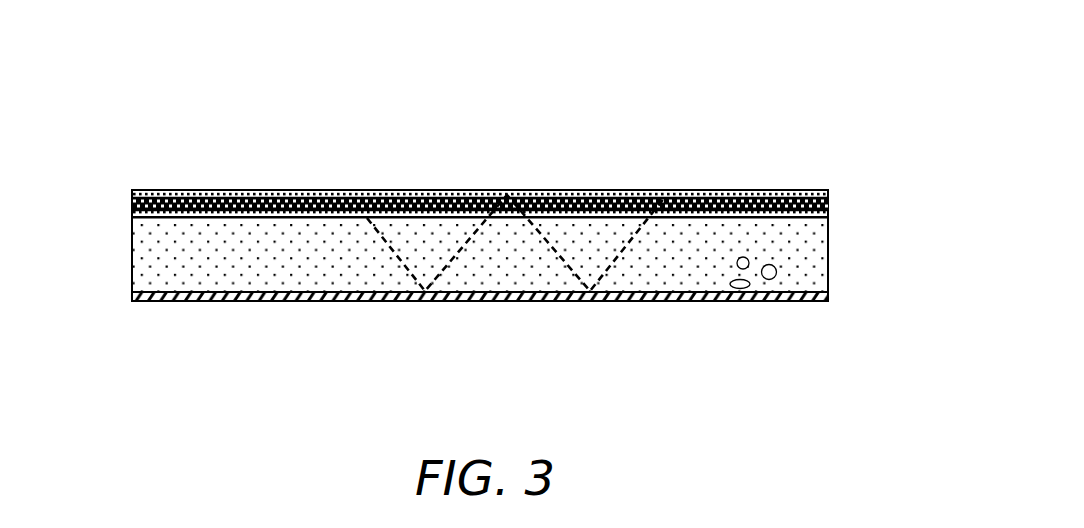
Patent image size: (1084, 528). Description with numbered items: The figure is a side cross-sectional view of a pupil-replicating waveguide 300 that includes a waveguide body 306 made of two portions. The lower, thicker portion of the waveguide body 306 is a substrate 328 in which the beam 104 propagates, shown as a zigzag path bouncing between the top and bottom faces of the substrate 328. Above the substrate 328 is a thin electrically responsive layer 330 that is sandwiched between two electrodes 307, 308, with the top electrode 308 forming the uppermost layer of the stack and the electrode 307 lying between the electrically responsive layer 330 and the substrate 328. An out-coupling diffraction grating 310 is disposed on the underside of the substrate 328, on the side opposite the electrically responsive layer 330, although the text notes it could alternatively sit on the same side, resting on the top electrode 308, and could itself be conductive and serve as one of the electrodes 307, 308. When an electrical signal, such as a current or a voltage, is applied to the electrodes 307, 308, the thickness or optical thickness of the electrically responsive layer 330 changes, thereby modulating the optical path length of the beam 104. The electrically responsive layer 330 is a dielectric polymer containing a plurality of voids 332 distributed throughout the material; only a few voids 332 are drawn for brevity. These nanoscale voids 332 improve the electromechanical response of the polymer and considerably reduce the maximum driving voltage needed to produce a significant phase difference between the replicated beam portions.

The pupil-replicating waveguide 300 is at (500, 231).
The beam 104 is at (392, 247).
The waveguide body 306 is at (500, 245).
The electrode 307 is at (828, 217).
The electrode 308 is at (793, 190).
The out-coupling diffraction grating 310 is at (684, 296).
The substrate 328 is at (266, 266).
The electrically responsive layer 330 is at (828, 203).
The voids 332 is at (771, 280).